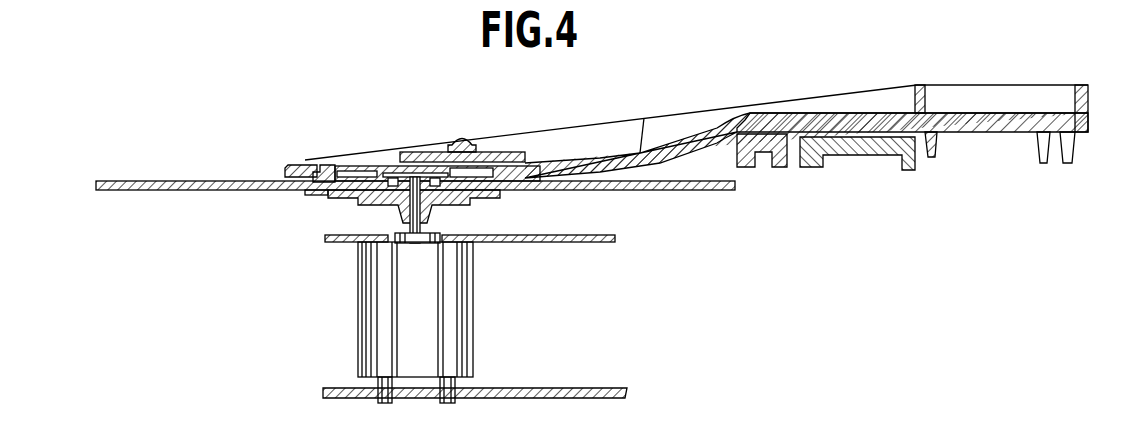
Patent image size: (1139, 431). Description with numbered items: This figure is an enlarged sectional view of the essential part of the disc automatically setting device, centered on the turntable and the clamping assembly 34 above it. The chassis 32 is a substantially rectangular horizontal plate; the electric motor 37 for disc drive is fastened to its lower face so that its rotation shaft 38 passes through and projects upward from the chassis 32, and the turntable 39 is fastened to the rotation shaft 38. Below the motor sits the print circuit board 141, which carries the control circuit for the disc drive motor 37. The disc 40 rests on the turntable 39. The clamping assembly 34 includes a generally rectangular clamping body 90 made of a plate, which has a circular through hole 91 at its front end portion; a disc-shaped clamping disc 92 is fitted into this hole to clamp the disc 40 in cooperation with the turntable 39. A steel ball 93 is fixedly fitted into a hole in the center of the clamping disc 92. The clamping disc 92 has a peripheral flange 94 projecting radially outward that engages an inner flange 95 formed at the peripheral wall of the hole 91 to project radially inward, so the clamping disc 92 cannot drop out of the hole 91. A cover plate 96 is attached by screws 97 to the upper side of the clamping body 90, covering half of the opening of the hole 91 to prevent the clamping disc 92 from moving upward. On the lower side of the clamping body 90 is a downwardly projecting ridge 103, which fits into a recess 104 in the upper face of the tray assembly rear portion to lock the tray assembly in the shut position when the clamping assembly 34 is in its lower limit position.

The chassis 32 is at (583, 245).
The clamping assembly 34 is at (716, 108).
The electric motor 37 is at (474, 323).
The rotation shaft 38 is at (430, 217).
The turntable 39 is at (372, 202).
The disc 40 is at (202, 180).
The clamping body 90 is at (625, 133).
The circular through hole 91 is at (319, 164).
The clamping disc 92 is at (381, 167).
The steel ball 93 is at (416, 165).
The peripheral flange 94 is at (327, 163).
The inner flange 95 is at (310, 187).
The cover plate 96 is at (498, 148).
The screws 97 is at (460, 138).
The ridge 103 is at (815, 167).
The recess 104 is at (800, 147).
The print circuit board 141 is at (605, 388).